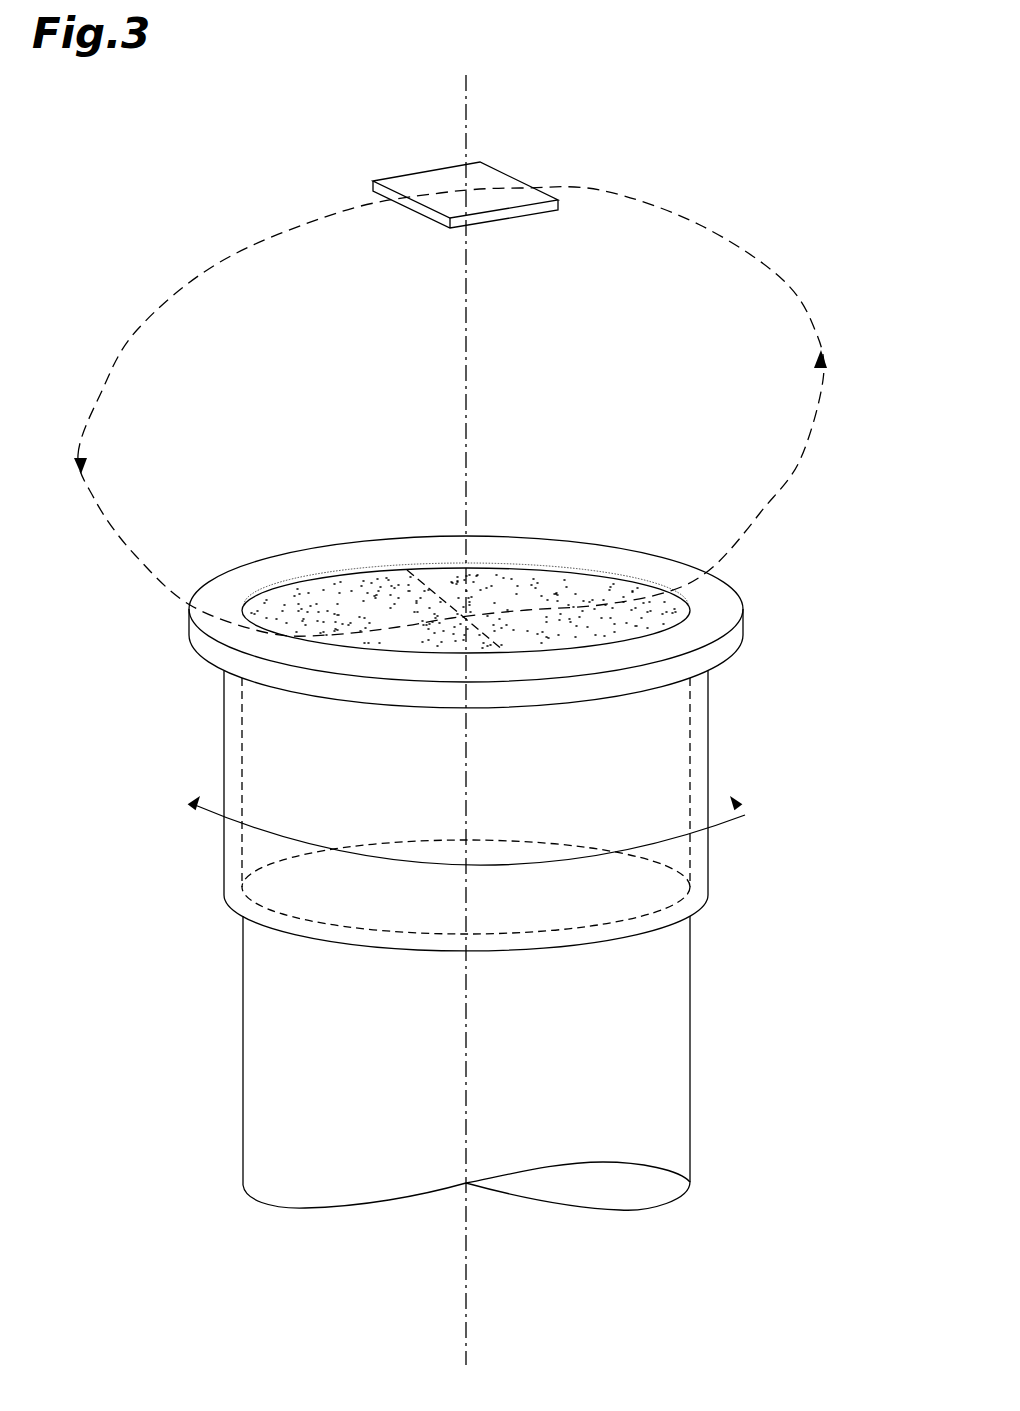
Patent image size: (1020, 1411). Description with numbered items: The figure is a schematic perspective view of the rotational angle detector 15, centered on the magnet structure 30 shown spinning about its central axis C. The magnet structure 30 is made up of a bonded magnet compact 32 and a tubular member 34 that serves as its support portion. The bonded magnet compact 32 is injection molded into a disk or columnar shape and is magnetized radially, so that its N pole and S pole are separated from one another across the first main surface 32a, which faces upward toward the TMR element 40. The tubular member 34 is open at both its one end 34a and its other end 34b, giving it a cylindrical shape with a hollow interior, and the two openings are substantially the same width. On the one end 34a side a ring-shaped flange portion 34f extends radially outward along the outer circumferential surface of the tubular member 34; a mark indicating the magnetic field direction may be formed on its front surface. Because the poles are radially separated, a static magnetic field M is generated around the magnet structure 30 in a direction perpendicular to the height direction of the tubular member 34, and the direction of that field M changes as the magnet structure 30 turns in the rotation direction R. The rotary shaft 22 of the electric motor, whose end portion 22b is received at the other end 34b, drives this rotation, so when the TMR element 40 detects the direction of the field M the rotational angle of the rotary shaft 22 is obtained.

The rotational angle detector 15 is at (846, 207).
The TMR element 40 is at (410, 186).
The magnet structure 30 is at (800, 672).
The bonded magnet compact 32 is at (648, 625).
The first main surface 32a is at (560, 590).
The tubular member 34 is at (708, 745).
The one end 34a is at (697, 610).
The other end 34b is at (272, 905).
The flange portion 34f is at (205, 648).
The end portion of shaft 22b is at (660, 1022).
The rotary shaft 22 is at (553, 1063).
The magnetic field M is at (824, 374).
The rotation direction R is at (752, 823).
The central axis C is at (466, 1328).